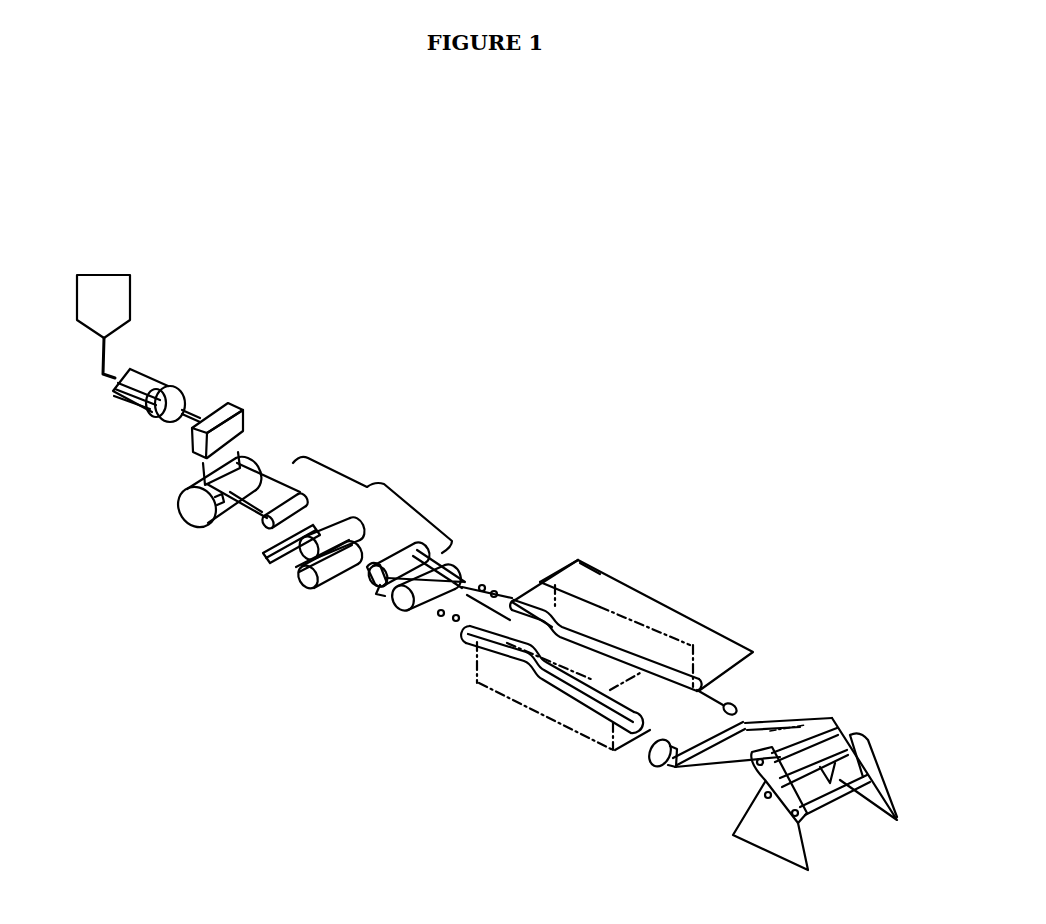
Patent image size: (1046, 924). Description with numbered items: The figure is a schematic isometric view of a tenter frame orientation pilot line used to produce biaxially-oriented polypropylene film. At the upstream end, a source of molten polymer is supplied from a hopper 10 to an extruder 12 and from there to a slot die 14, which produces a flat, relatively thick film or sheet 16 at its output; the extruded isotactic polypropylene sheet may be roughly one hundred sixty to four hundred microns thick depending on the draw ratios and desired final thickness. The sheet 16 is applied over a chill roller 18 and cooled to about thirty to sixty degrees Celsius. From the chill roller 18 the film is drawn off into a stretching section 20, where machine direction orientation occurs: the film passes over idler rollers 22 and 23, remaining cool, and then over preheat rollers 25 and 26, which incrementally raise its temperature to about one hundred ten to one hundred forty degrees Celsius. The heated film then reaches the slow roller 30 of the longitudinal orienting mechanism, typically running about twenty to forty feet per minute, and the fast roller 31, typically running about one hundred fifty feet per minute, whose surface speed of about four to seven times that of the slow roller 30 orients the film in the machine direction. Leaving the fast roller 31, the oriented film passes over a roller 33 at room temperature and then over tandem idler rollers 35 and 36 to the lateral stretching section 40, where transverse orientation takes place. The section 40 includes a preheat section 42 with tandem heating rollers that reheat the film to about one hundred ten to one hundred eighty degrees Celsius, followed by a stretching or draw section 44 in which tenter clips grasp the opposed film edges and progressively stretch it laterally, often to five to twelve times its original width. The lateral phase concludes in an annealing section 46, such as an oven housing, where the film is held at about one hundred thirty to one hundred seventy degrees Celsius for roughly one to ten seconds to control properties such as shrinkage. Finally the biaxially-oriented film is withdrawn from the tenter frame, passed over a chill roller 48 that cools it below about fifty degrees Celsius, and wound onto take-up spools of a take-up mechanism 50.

The hopper 10 is at (131, 293).
The extruder 12 is at (157, 378).
The slot die 14 is at (243, 415).
The film or sheet 16 is at (237, 451).
The chill roller 18 is at (185, 520).
The stretching section 20 is at (372, 505).
The idler roller 22 is at (253, 528).
The idler roller 23 is at (263, 553).
The preheat roller 25 is at (297, 567).
The preheat roller 26 is at (303, 590).
The slow roller 30 is at (367, 590).
The fast roller 31 is at (377, 597).
The roller 33 is at (458, 563).
The tandem idler roller 35 is at (437, 614).
The tandem idler roller 36 is at (445, 632).
The lateral stretching section 40 is at (590, 665).
The preheat section 42 is at (600, 572).
The stretching or draw section 44 is at (647, 592).
The annealing section 46 is at (723, 630).
The chill roller 48 is at (737, 708).
The take-up mechanism 50 is at (878, 738).